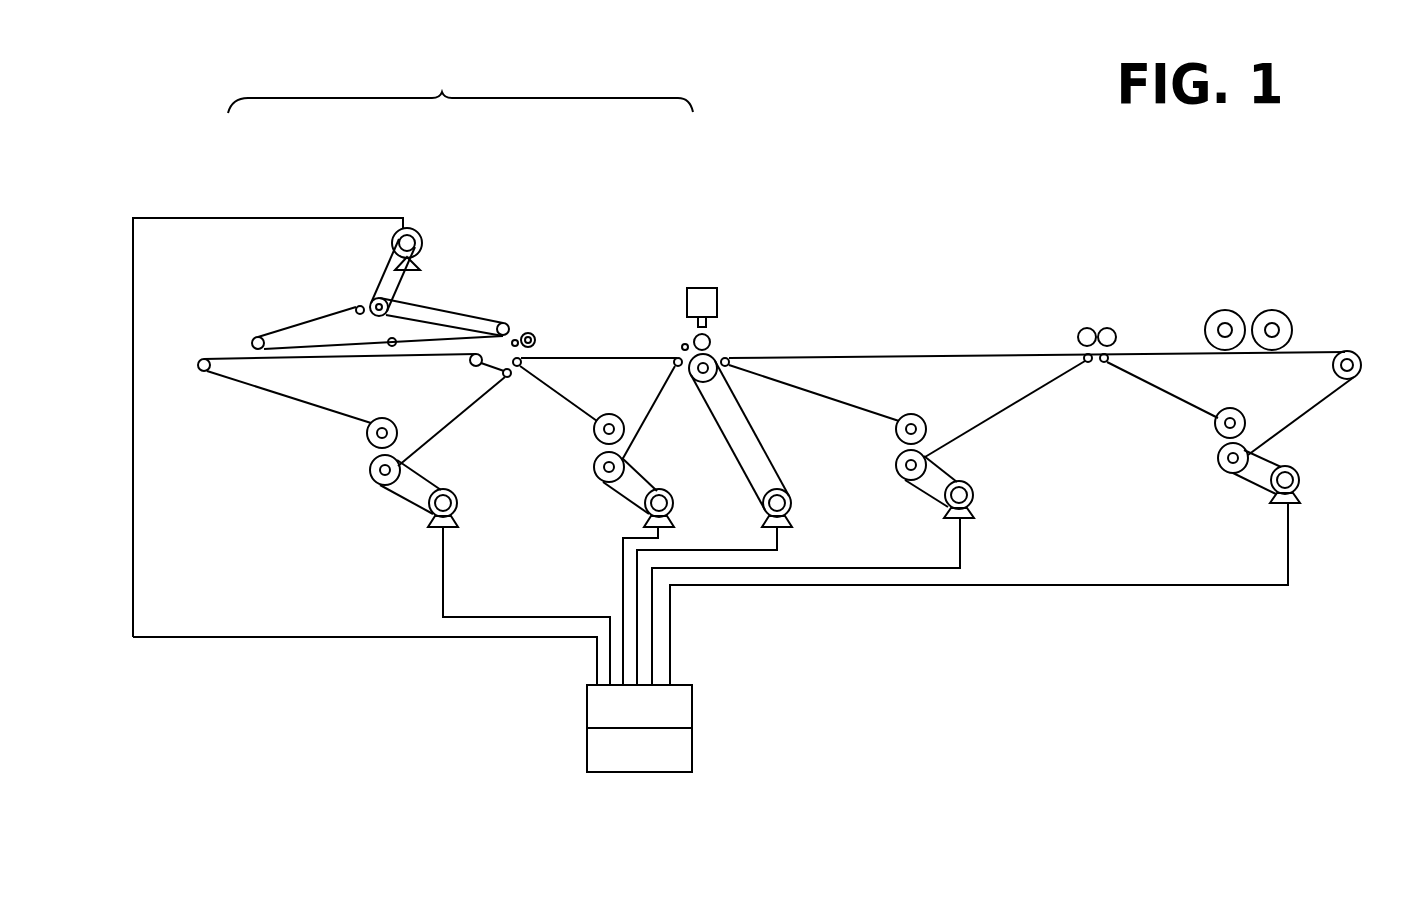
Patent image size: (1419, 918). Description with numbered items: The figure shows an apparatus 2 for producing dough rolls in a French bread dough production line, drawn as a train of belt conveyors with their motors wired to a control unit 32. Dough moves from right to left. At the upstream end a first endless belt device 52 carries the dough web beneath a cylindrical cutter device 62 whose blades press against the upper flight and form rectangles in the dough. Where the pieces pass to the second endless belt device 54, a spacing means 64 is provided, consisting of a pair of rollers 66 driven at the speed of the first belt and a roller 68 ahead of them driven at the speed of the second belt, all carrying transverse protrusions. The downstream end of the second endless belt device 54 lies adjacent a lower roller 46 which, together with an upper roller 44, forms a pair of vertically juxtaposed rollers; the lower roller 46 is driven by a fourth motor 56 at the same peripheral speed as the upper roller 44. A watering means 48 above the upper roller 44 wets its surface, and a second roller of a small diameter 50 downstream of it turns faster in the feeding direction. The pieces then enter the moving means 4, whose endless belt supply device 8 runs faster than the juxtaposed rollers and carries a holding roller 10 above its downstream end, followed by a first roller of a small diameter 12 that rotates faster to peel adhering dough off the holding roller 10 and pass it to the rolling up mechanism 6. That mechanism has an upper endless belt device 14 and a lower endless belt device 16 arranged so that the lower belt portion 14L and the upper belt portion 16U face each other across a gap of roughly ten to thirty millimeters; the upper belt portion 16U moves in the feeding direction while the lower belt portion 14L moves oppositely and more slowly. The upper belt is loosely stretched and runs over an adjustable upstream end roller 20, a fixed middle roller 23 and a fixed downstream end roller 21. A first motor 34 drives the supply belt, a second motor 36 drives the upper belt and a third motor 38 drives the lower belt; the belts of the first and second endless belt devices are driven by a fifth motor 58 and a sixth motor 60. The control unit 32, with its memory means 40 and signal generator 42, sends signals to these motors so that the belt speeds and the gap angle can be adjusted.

The apparatus 2 is at (460, 84).
The moving means 4 is at (585, 246).
The rolling up mechanism 6 is at (326, 312).
The endless belt supply device 8 is at (567, 358).
The holding roller 10 is at (532, 336).
The first roller of a small diameter 12 is at (528, 332).
The upper endless belt device 14 is at (418, 302).
The lower belt portion 14L is at (383, 336).
The lower endless belt device 16 is at (280, 394).
The upper belt portion 16U is at (340, 370).
The upstream end roller 20 is at (501, 323).
The downstream end roller 21 is at (254, 338).
The middle roller 23 is at (396, 342).
The control unit 32 is at (578, 722).
The first motor 34 is at (676, 504).
The second motor 36 is at (414, 230).
The third motor 38 is at (460, 504).
The memory means 40 is at (683, 749).
The signal generator 42 is at (683, 707).
The upper roller 44 is at (710, 338).
The lower roller 46 is at (718, 357).
The watering means 48 is at (705, 287).
The second roller of a small diameter 50 is at (682, 345).
The first endless belt device 52 is at (1303, 421).
The second endless belt device 54 is at (862, 357).
The fourth motor 56 is at (793, 504).
The fifth motor 58 is at (1299, 485).
The sixth motor 60 is at (975, 496).
The cylindrical cutter device 62 is at (1246, 316).
The spacing means 64 is at (1098, 348).
The pair of rollers 66 is at (1114, 330).
The roller 68 is at (1080, 330).